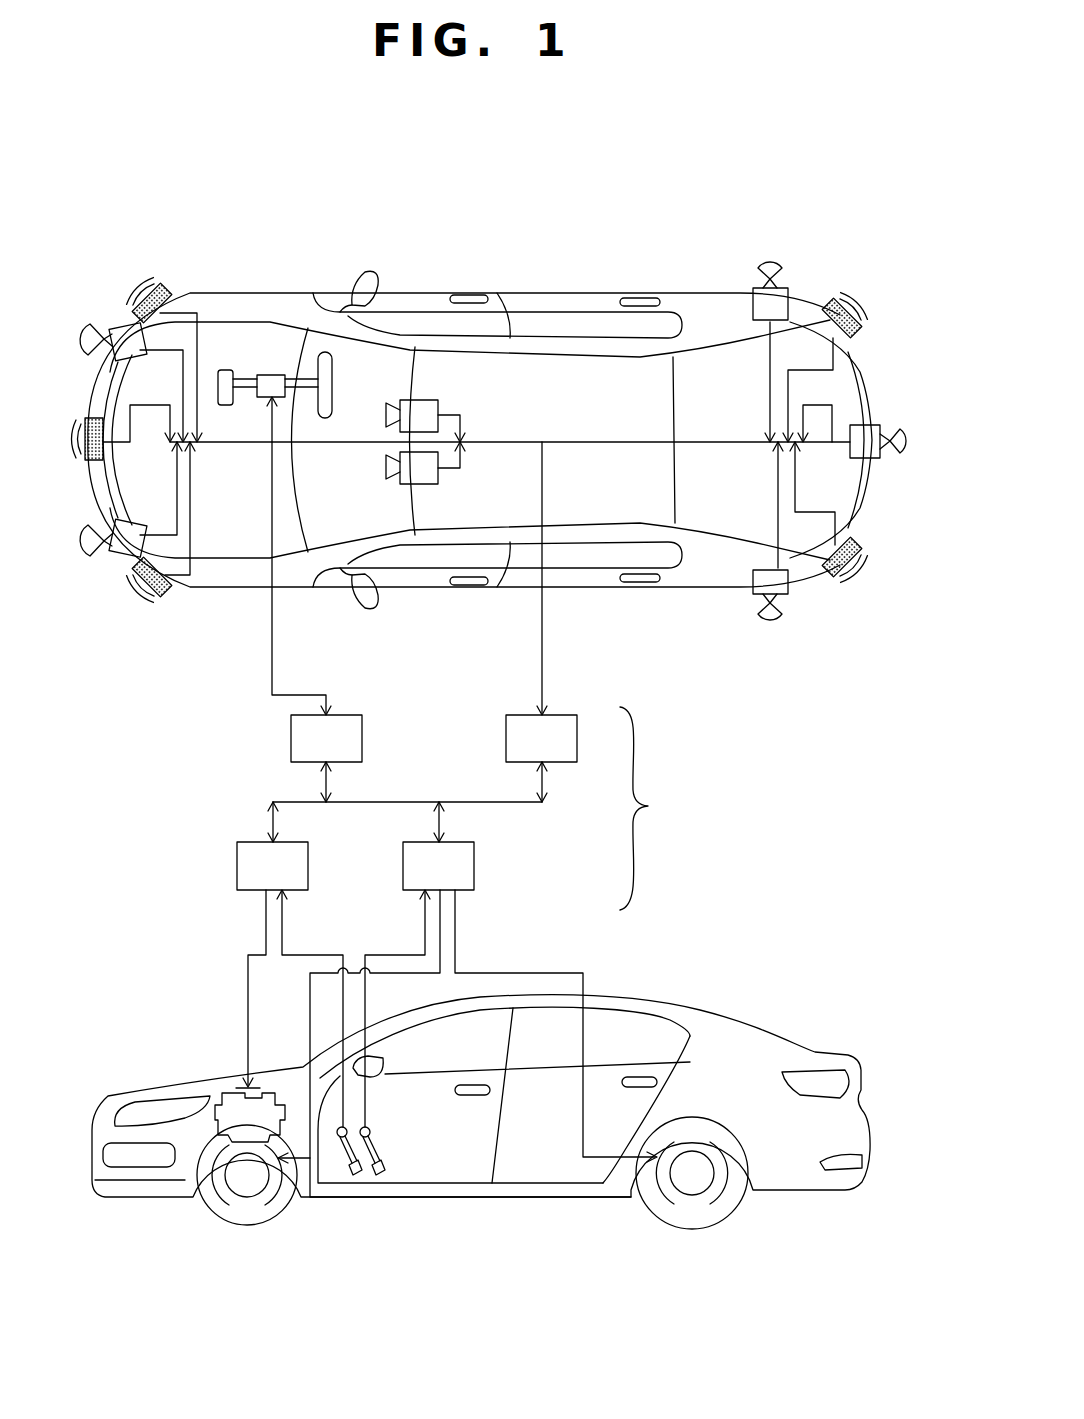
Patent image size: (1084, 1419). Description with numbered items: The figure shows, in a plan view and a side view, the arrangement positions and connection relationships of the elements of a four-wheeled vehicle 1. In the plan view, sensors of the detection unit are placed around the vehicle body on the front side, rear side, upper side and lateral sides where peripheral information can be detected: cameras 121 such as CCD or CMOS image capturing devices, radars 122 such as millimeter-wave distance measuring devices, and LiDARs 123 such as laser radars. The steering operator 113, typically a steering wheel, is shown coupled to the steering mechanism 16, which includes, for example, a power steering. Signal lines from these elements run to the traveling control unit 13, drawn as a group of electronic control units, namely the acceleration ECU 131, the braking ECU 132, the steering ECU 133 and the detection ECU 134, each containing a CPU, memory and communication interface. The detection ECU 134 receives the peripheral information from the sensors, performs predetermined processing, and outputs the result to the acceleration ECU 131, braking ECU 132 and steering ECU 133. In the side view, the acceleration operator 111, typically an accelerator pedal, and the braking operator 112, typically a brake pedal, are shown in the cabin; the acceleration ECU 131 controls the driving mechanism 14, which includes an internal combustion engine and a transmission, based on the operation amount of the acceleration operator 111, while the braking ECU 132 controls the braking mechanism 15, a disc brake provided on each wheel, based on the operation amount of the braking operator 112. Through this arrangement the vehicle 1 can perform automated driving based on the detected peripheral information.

The vehicle 1 is at (690, 246).
The traveling control unit 13 is at (476, 755).
The acceleration ECU 131 is at (272, 866).
The braking ECU 132 is at (438, 866).
The steering ECU 133 is at (326, 738).
The detection ECU 134 is at (541, 738).
The driving mechanism 14 is at (222, 1100).
The braking mechanism 15 is at (252, 1198).
The steering mechanism 16 is at (270, 374).
The acceleration operator 111 is at (358, 1180).
The braking operator 112 is at (390, 1180).
The steering operator 113 is at (335, 362).
The camera 121 is at (440, 400).
The radar 122 is at (160, 290).
The LiDAR 123 is at (122, 328).